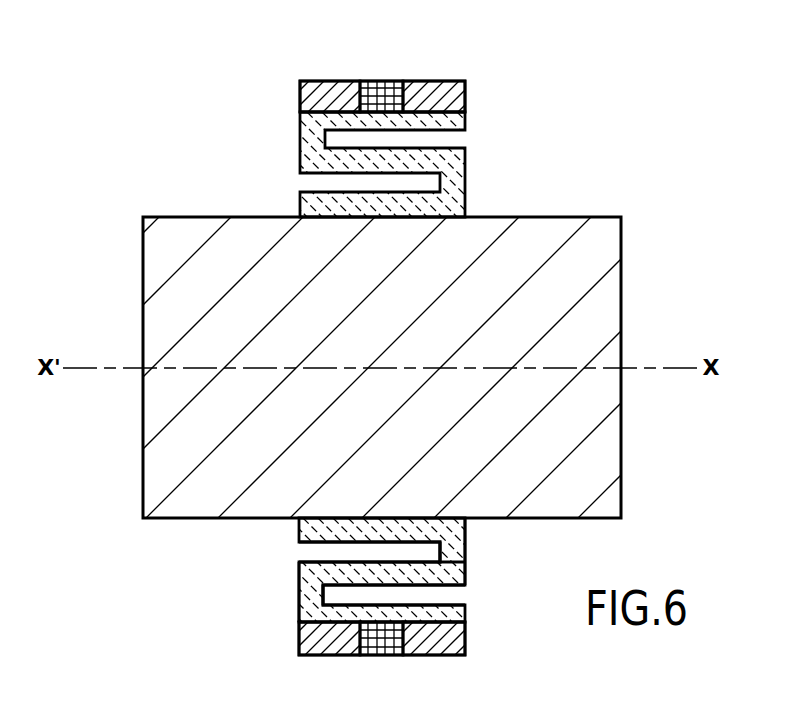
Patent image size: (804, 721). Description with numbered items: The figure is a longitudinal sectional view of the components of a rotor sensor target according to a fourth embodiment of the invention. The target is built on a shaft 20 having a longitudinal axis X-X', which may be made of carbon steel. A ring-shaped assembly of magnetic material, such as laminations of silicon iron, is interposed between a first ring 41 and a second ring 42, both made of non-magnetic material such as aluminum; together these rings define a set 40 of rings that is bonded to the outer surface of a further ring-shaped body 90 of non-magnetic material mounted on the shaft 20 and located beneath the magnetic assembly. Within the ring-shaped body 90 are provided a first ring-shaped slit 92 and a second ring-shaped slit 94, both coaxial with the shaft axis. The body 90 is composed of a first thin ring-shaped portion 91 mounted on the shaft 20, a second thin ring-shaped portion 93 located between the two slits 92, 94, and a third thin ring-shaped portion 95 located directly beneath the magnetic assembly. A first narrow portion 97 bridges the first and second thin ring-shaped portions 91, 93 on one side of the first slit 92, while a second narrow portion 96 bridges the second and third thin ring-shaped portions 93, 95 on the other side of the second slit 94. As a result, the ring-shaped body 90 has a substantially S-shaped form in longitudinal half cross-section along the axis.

The shaft 20 is at (152, 267).
The set of rings 40 is at (291, 69).
The first ring 41 is at (327, 92).
The second ring 42 is at (432, 90).
The ring-shaped body of non-magnetic material 90 is at (285, 612).
The first thin ring-shaped portion 91 is at (352, 532).
The first ring-shaped slit 92 is at (308, 545).
The second thin ring-shaped portion 93 is at (448, 585).
The second ring-shaped slit 94 is at (338, 596).
The third thin ring-shaped portion 95 is at (427, 612).
The second narrow portion 96 is at (312, 595).
The first narrow portion 97 is at (453, 550).